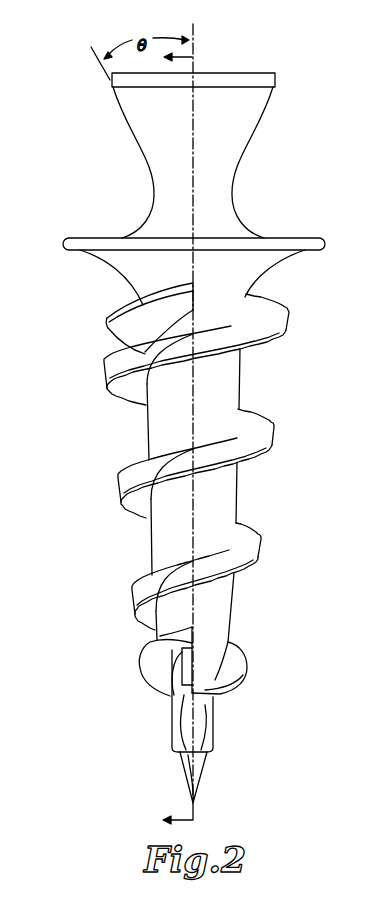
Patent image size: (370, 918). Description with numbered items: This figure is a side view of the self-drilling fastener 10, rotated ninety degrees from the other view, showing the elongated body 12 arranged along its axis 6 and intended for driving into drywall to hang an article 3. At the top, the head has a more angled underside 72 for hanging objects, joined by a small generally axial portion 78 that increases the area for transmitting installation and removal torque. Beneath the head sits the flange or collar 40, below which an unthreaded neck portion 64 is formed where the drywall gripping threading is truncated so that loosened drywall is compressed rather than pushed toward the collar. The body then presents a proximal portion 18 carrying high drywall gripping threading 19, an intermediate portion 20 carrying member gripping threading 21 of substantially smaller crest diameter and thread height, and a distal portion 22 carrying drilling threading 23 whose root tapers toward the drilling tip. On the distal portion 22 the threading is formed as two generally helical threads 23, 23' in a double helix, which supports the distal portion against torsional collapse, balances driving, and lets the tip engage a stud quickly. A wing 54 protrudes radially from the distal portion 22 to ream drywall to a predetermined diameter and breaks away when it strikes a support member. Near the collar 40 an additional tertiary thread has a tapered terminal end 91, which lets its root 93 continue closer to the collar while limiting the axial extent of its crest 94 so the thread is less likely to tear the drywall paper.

The article 3 is at (188, 437).
The axis 6 is at (195, 24).
The self-drilling fastener 10 is at (278, 129).
The elongated body 12 is at (236, 397).
The proximal portion 18 is at (101, 380).
The drywall gripping threading 19 is at (268, 314).
The intermediate portion 20 is at (128, 627).
The member gripping threading 21 is at (254, 550).
The distal portion 22 is at (164, 766).
The drilling threading 23 is at (239, 660).
The helical thread 23' is at (137, 679).
The collar 40 is at (65, 243).
The wing 54 is at (180, 676).
The unthreaded neck portion 64 is at (130, 277).
The angled underside 72 is at (130, 134).
The generally axial portion 78 is at (277, 79).
The terminal end 91 is at (193, 297).
The root 93 is at (158, 335).
The crest 94 is at (106, 321).